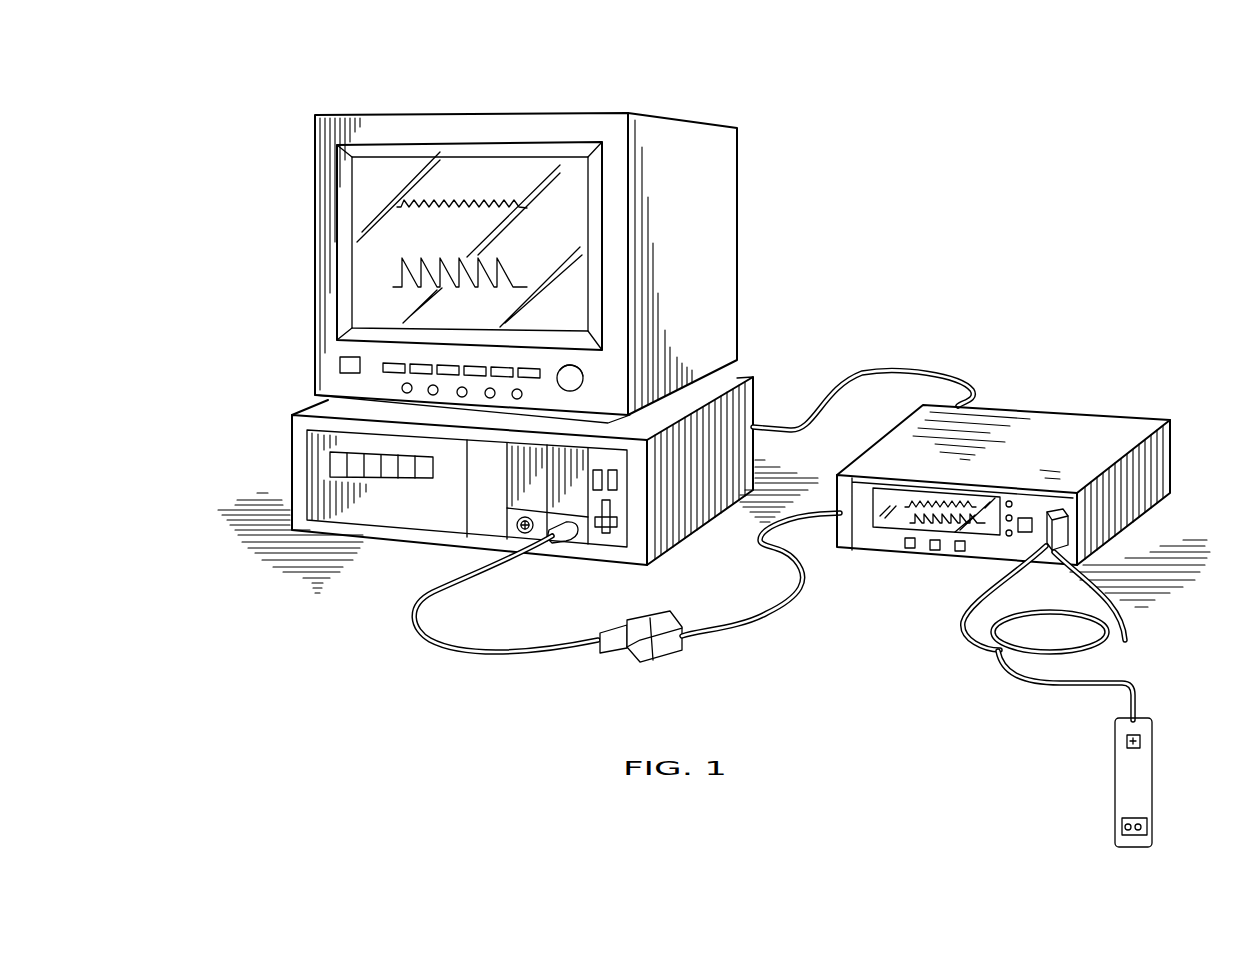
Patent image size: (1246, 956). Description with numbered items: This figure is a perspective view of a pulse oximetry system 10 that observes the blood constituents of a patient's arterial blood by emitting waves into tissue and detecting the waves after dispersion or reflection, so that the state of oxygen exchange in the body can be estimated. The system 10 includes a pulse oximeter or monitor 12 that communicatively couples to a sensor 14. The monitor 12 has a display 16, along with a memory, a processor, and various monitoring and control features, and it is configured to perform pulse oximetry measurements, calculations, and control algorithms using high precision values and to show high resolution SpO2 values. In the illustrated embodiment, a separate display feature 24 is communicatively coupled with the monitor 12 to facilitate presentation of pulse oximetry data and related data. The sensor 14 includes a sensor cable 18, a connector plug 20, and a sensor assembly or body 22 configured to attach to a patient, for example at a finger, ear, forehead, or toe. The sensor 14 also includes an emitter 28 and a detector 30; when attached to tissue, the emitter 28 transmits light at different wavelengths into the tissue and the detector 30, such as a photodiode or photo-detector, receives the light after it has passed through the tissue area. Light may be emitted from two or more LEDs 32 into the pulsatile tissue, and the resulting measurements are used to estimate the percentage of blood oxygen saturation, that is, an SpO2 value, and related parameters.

The pulse oximetry system 10 is at (250, 168).
The monitor 12 is at (1071, 410).
The sensor 14 is at (1165, 789).
The display 16 is at (890, 527).
The sensor cable 18 is at (970, 633).
The connector plug 20 is at (1113, 614).
The sensor assembly or body 22 is at (1113, 783).
The display feature 24 is at (573, 112).
The emitter 28 is at (1153, 823).
The detector 30 is at (1140, 742).
The LEDs 32 is at (1137, 831).